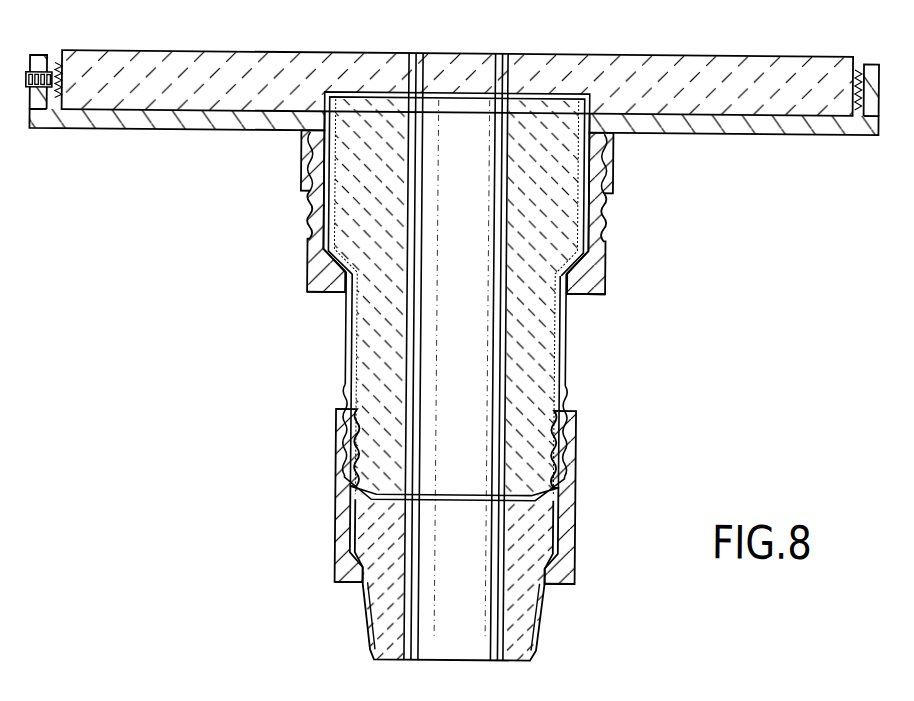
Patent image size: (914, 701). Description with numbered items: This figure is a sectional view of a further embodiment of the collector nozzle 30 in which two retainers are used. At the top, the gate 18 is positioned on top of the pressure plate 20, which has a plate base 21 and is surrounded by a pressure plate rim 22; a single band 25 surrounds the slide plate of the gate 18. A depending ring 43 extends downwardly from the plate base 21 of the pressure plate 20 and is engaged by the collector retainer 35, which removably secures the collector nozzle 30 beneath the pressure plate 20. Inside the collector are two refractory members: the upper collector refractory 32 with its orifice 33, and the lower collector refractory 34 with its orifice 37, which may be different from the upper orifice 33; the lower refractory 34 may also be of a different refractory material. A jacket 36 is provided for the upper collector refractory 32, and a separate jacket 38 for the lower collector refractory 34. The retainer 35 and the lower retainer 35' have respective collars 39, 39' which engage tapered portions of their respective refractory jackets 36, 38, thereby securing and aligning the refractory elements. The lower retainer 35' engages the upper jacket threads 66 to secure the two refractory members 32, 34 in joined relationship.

The gate 18 is at (686, 55).
The plate base 21 is at (756, 132).
The pressure plate rim 22 is at (29, 109).
The band 25 is at (50, 65).
The pressure plate 20 is at (880, 122).
The collector retainer 35 is at (487, 212).
The depending ring 43 is at (299, 158).
The collar 39 is at (490, 257).
The upper collector refractory 32 is at (546, 262).
The jacket 36 is at (569, 367).
The upper jacket threads 66 is at (571, 446).
The orifice 33 is at (461, 262).
The collector nozzle 30 is at (596, 327).
The lower retainer 35' is at (498, 497).
The collar 39' is at (497, 586).
The lower collector refractory 34 is at (383, 620).
The jacket 38 is at (548, 599).
The orifice 37 is at (463, 585).